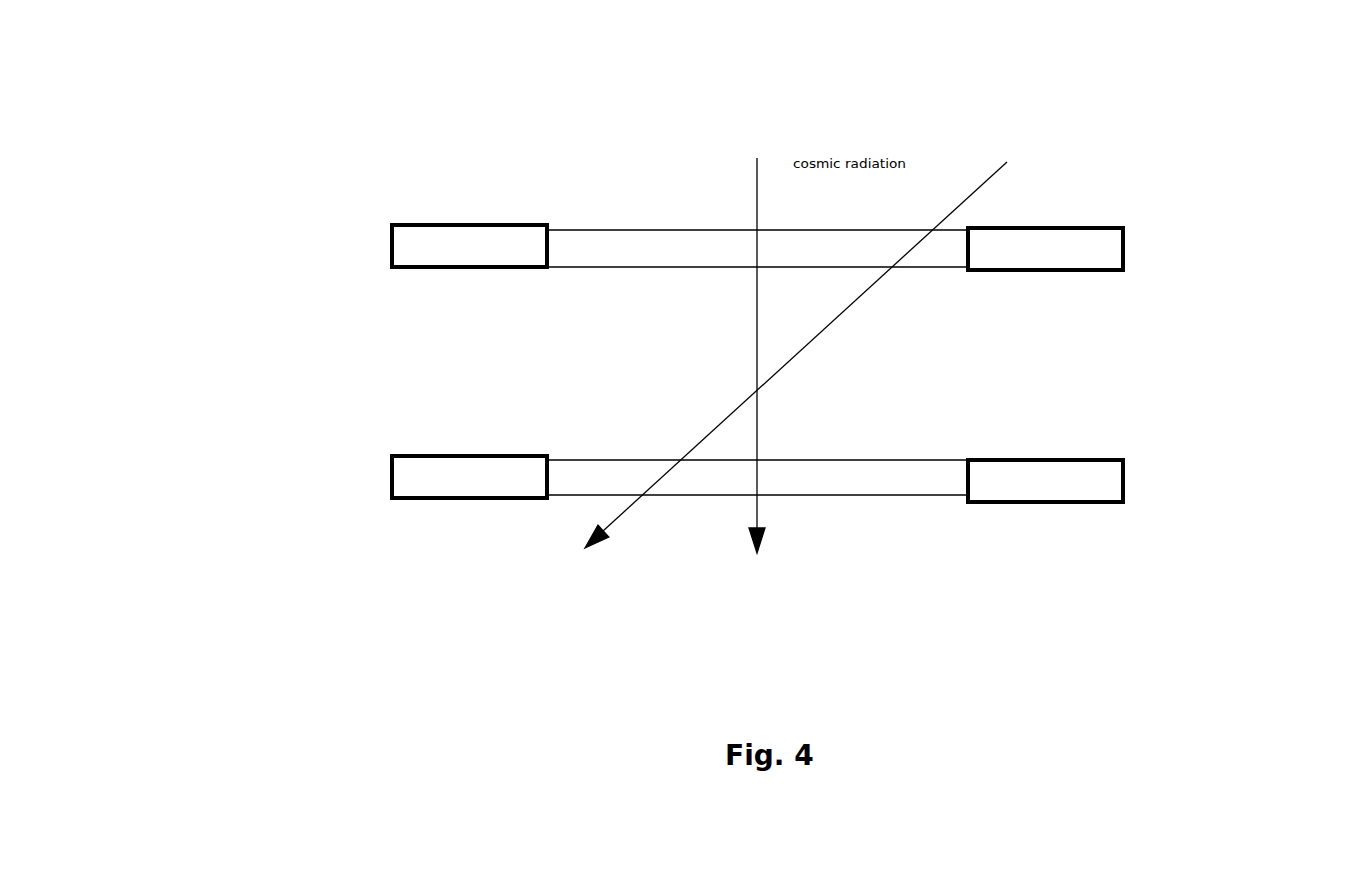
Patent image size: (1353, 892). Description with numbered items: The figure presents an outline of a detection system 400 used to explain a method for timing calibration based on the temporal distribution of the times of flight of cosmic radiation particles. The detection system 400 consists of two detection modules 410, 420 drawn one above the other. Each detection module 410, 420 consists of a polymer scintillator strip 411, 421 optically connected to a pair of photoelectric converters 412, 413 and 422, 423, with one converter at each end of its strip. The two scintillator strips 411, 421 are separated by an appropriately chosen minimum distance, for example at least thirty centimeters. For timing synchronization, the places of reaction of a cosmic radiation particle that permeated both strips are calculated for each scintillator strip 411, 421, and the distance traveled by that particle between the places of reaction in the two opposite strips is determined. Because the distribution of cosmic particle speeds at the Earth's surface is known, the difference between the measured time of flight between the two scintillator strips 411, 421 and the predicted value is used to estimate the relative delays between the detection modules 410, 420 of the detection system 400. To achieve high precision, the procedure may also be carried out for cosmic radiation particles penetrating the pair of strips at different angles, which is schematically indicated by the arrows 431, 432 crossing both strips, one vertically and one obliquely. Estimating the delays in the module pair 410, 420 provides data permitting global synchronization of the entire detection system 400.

The detection system 400 is at (613, 187).
The detection module 410 is at (500, 211).
The scintillator strip 411 is at (695, 250).
The photoelectric converter 412 is at (390, 238).
The photoelectric converter 413 is at (1124, 249).
The detection module 420 is at (553, 515).
The scintillator strip 421 is at (838, 470).
The photoelectric converter 422 is at (392, 487).
The photoelectric converter 423 is at (1124, 497).
The arrow 431 is at (752, 322).
The arrow 432 is at (748, 530).